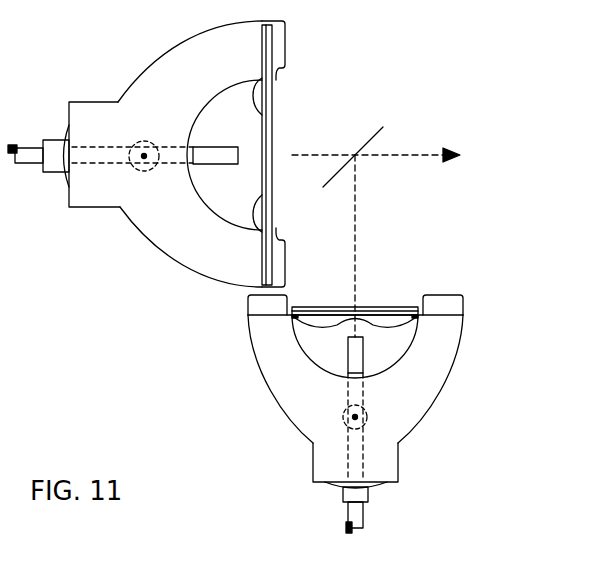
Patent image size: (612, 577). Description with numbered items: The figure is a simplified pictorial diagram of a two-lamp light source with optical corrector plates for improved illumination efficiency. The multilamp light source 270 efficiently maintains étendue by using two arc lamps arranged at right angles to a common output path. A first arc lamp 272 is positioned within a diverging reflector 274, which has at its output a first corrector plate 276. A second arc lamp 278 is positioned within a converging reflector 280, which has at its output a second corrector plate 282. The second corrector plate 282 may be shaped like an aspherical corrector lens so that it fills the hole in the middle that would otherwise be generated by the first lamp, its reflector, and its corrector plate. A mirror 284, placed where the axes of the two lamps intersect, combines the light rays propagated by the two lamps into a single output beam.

The multilamp light source 270 is at (446, 74).
The first arc lamp 272 is at (143, 158).
The diverging reflector 274 is at (195, 270).
The first corrector plate 276 is at (277, 90).
The second arc lamp 278 is at (345, 420).
The converging reflector 280 is at (432, 391).
The second corrector plate 282 is at (398, 302).
The mirror 284 is at (365, 143).